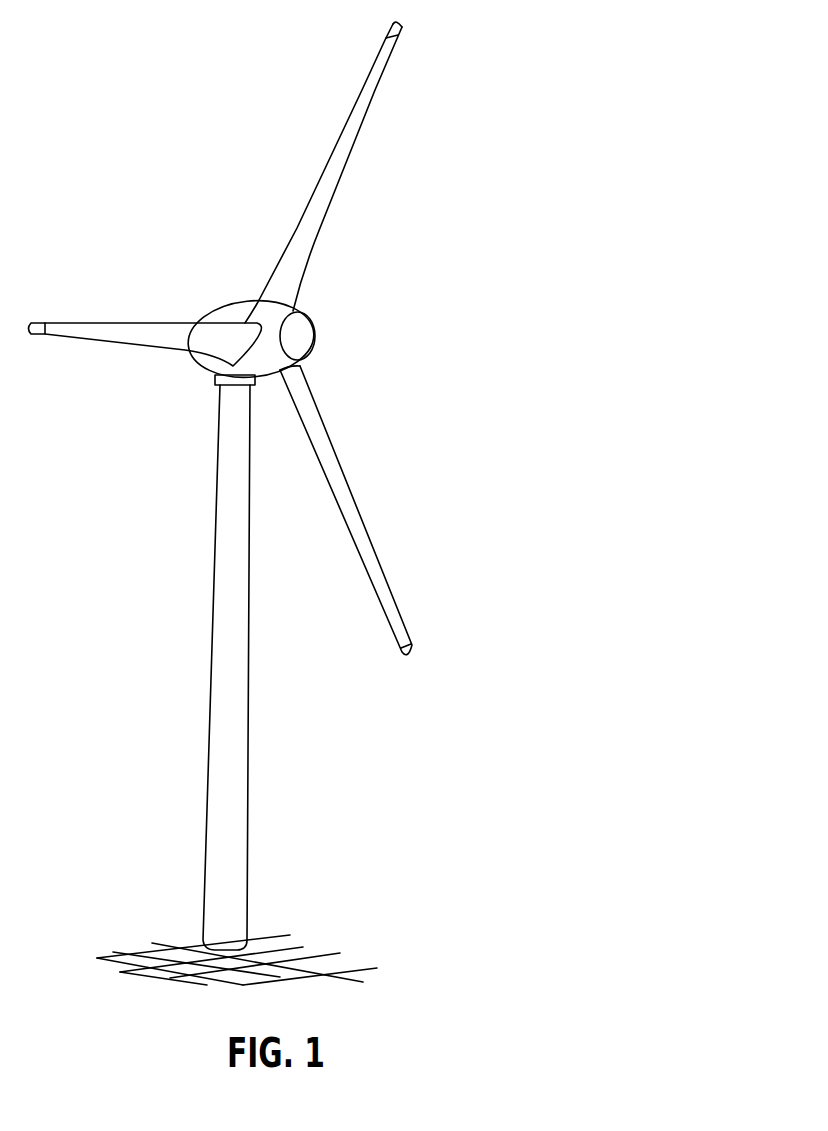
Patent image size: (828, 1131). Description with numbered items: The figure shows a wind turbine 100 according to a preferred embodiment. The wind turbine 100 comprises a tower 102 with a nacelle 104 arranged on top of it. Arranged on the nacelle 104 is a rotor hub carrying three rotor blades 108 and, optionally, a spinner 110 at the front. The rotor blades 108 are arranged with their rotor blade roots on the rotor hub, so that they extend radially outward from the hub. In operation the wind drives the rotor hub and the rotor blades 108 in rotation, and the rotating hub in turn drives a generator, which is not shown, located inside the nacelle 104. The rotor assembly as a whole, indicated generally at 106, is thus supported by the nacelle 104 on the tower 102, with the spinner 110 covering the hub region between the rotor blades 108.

The wind turbine 100 is at (152, 437).
The tower 102 is at (240, 783).
The nacelle 104 is at (227, 316).
The rotor 106 is at (418, 283).
The rotor blades 108 is at (352, 117).
The spinner 110 is at (305, 337).